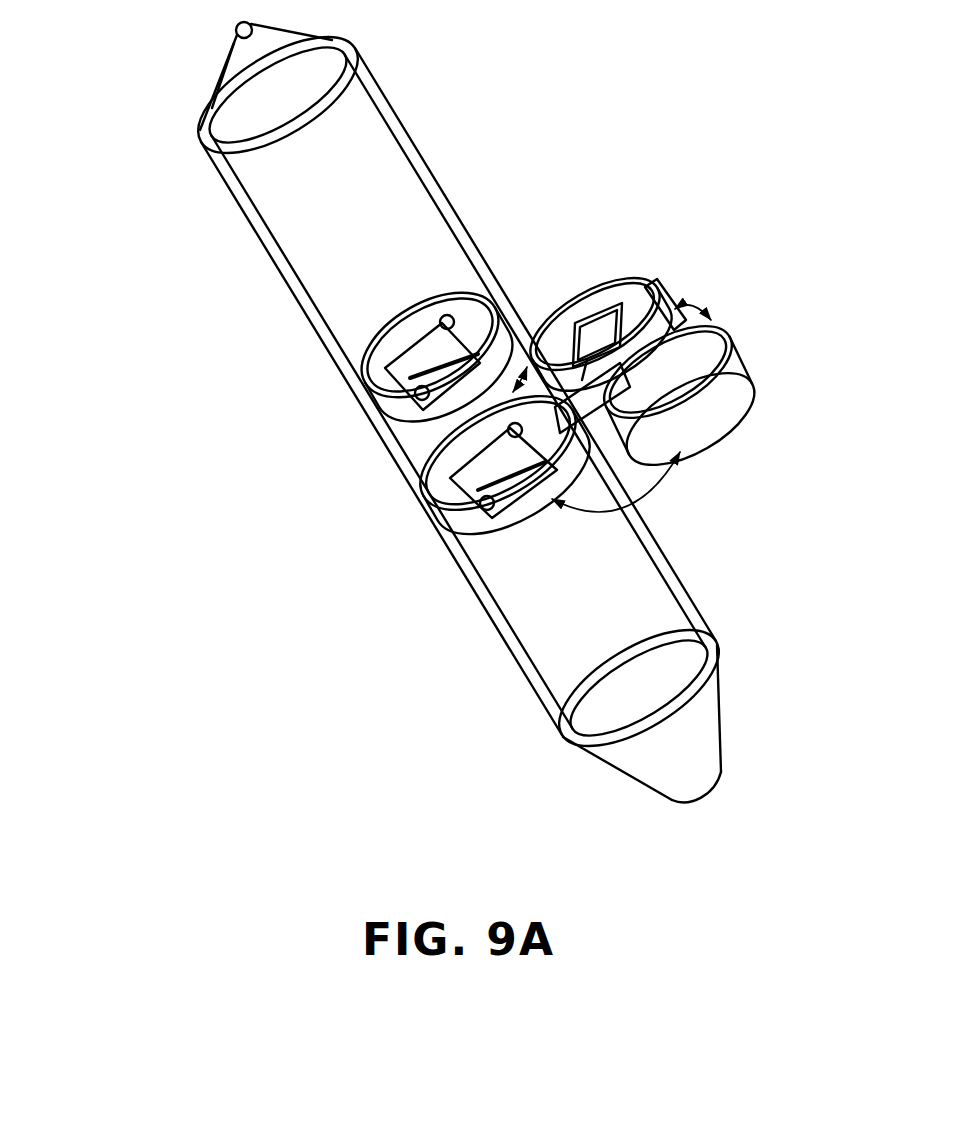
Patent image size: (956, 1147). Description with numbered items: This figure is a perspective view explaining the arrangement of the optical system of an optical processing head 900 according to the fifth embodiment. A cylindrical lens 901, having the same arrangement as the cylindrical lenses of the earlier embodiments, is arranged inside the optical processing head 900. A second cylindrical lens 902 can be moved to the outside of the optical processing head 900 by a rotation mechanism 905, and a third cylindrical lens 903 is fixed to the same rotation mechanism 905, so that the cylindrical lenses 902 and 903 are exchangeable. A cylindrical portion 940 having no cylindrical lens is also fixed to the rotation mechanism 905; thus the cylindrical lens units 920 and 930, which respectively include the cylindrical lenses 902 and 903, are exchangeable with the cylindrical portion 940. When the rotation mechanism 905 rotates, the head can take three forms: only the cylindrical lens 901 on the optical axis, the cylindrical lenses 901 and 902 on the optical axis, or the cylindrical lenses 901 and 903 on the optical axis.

The optical processing head 900 is at (178, 201).
The cylindrical lens 901 is at (430, 363).
The cylindrical lens 902 is at (515, 497).
The cylindrical lens 903 is at (593, 323).
The rotation mechanism 905 is at (593, 425).
The cylindrical lens unit 920 is at (412, 478).
The cylindrical lens unit 930 is at (651, 290).
The cylindrical portion 940 is at (757, 383).